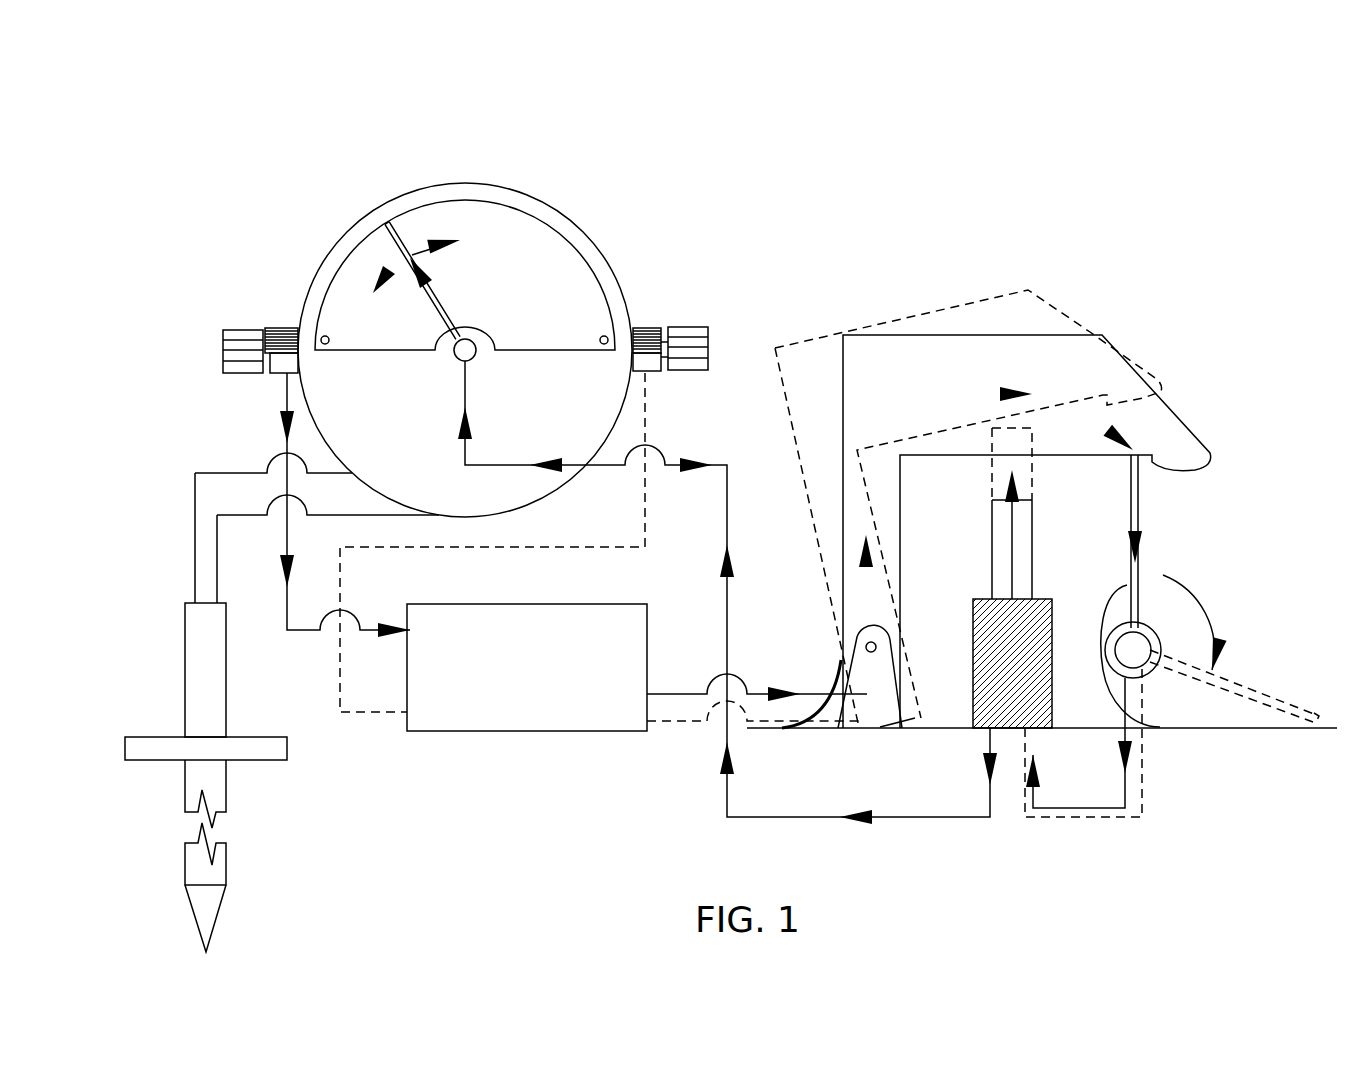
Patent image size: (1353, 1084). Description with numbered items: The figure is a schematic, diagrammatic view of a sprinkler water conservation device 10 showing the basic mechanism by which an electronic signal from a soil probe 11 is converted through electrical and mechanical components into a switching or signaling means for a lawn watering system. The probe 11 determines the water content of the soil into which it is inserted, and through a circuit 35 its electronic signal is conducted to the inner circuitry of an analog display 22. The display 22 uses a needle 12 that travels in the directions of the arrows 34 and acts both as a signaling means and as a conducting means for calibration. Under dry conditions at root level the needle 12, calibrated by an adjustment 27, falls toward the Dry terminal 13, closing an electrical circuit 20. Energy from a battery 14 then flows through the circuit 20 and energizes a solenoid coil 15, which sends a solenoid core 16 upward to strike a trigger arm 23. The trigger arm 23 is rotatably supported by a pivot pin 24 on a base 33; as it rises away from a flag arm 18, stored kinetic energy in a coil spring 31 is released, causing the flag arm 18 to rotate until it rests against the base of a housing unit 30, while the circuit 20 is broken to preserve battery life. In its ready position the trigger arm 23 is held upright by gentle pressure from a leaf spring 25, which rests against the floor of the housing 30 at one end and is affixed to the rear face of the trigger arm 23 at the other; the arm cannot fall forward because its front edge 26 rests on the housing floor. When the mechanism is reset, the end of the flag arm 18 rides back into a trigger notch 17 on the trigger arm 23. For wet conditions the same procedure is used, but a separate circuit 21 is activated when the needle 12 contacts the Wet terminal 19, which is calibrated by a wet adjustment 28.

The water conservation device 10 is at (1010, 246).
The probe 11 is at (217, 793).
The needle 12 is at (403, 250).
The Dry terminal 13 is at (322, 337).
The battery 14 is at (503, 669).
The solenoid coil 15 is at (1028, 710).
The solenoid core 16 is at (1000, 556).
The trigger notch 17 is at (1147, 455).
The flag arm 18 is at (1142, 512).
The Wet terminal 19 is at (607, 337).
The electrical circuit 20 is at (303, 628).
The circuit 21 is at (682, 721).
The analog display 22 is at (402, 193).
The trigger arm 23 is at (940, 365).
The pivot pin 24 is at (877, 640).
The leaf spring 25 is at (840, 688).
The front edge 26 is at (917, 719).
The adjustment 27 is at (285, 335).
The wet adjustment 28 is at (648, 333).
The housing unit 30 is at (1198, 727).
The coil spring 31 is at (1112, 602).
The base 33 is at (872, 707).
The arrows 34 is at (390, 262).
The circuit 35 is at (270, 452).